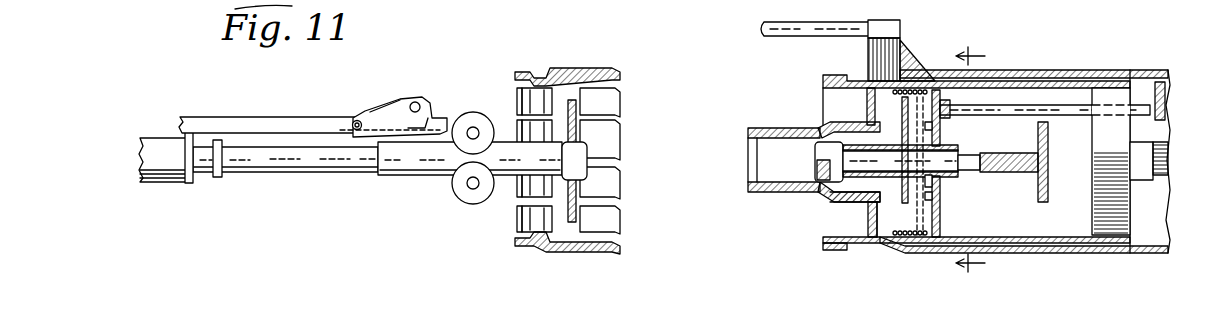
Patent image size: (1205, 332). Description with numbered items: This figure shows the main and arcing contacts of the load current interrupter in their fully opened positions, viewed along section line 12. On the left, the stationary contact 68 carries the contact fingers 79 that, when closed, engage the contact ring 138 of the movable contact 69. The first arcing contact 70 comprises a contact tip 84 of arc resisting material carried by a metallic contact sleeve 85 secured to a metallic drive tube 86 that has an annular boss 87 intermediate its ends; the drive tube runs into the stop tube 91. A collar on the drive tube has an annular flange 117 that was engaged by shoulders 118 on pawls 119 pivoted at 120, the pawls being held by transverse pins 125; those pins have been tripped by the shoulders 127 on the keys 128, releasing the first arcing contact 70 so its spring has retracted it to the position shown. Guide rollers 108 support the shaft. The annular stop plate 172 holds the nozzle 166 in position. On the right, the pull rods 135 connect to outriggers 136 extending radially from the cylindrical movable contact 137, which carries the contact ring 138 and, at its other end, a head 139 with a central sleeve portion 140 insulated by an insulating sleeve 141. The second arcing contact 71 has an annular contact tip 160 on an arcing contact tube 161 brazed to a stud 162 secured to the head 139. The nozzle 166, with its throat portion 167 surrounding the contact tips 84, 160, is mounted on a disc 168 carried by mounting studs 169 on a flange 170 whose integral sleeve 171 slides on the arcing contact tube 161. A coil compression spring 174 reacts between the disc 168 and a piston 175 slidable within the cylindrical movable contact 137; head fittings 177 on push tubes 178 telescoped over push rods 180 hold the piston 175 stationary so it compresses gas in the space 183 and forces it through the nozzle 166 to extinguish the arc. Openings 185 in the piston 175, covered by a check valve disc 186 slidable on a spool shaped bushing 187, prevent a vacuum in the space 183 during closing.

The section line 12 is at (977, 150).
The stationary contact 68 is at (552, 127).
The movable contact 69 is at (1005, 42).
The first arcing contact 70 is at (415, 184).
The second arcing contact 71 is at (1012, 144).
The contact fingers 79 is at (512, 38).
The contact tip 84 is at (600, 140).
The metallic contact sleeve 85 is at (520, 164).
The metallic drive tube 86 is at (332, 170).
The annular boss 87 is at (220, 178).
The stop tube 91 is at (156, 184).
The guide rollers 108 is at (462, 178).
The annular flange 117 is at (190, 186).
The shoulders 118 is at (432, 113).
The pawls 119 is at (404, 104).
The pivot 120 is at (354, 121).
The transverse pins 125 is at (420, 105).
The shoulders 127 is at (363, 118).
The keys 128 is at (248, 118).
The pull rods 135 is at (824, 24).
The outriggers 136 is at (915, 56).
The cylindrical movable contact 137 is at (1005, 80).
The contact ring 138 is at (832, 74).
The head 139 is at (1100, 88).
The central sleeve portion 140 is at (1140, 148).
The insulating sleeve 141 is at (1160, 178).
The annular contact tip 160 is at (815, 168).
The arcing contact tube 161 is at (828, 176).
The stud 162 is at (1012, 166).
The nozzle 166 is at (820, 126).
The throat portion 167 is at (764, 128).
The disc 168 is at (866, 228).
The mounting studs 169 is at (868, 108).
The flange 170 is at (880, 214).
The sleeve 171 is at (849, 208).
The annular stop plate 172 is at (578, 110).
The coil compression spring 174 is at (915, 162).
The piston 175 is at (941, 226).
The head fittings 177 is at (946, 98).
The push tubes 178 is at (1030, 88).
The push rods 180 is at (1155, 98).
The space 183 is at (888, 246).
The openings 185 is at (933, 127).
The check valve disc 186 is at (925, 244).
The spool shaped bushing 187 is at (935, 183).